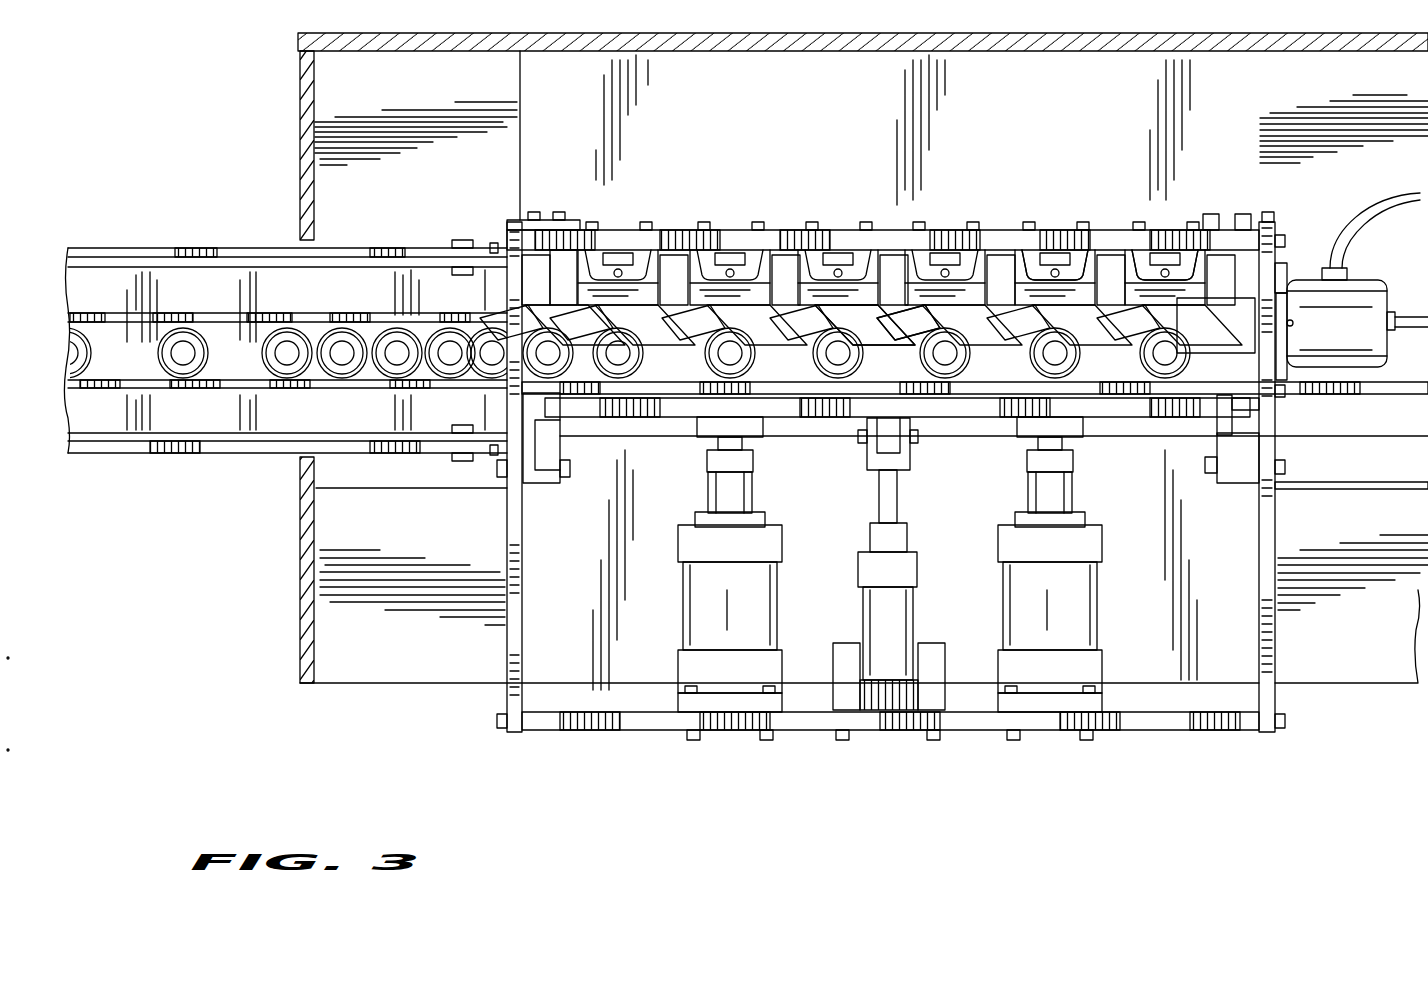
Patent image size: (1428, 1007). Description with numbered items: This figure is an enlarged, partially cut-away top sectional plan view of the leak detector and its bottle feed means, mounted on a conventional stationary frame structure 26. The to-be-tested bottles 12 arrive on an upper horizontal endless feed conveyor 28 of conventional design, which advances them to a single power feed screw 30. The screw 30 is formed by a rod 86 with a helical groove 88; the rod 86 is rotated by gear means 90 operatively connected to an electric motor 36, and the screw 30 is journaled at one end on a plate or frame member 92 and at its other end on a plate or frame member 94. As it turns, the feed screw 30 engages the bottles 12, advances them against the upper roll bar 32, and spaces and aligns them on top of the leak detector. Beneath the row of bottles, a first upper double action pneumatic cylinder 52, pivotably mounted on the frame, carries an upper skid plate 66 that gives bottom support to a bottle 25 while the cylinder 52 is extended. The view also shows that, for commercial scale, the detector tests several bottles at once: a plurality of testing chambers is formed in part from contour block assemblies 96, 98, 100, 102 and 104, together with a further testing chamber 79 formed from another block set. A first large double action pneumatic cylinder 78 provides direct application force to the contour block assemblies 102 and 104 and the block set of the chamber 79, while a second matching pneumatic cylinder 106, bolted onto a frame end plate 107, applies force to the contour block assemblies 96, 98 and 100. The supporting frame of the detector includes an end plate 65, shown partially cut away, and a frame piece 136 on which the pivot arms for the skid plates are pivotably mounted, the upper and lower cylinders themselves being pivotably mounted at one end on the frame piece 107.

The bottles 12 is at (447, 341).
The bottle 25 is at (1167, 367).
The stationary frame structure 26 is at (298, 126).
The feed conveyor 28 is at (110, 338).
The power feed screw 30 is at (855, 305).
The upper roll bar 32 is at (1192, 387).
The electric motor 36 is at (1353, 307).
The first upper double action pneumatic cylinder 52 is at (900, 620).
The end plate 65 is at (1277, 645).
The upper skid plate 66 is at (668, 410).
The first large double action pneumatic cylinder 78 is at (1085, 622).
The testing chamber 79 is at (1192, 262).
The rod 86 is at (962, 320).
The helical groove 88 is at (1002, 317).
The gear means 90 is at (1288, 260).
The plate or frame member 92 is at (515, 245).
The plate or frame member 94 is at (1267, 398).
The contour block assembly 96 is at (628, 290).
The contour block assembly 98 is at (718, 290).
The contour block assembly 100 is at (822, 285).
The contour block assembly 102 is at (937, 290).
The contour block assembly 104 is at (1050, 265).
The second matching pneumatic cylinder 106 is at (703, 618).
The frame end plate 107 is at (1230, 727).
The frame piece 136 is at (512, 646).